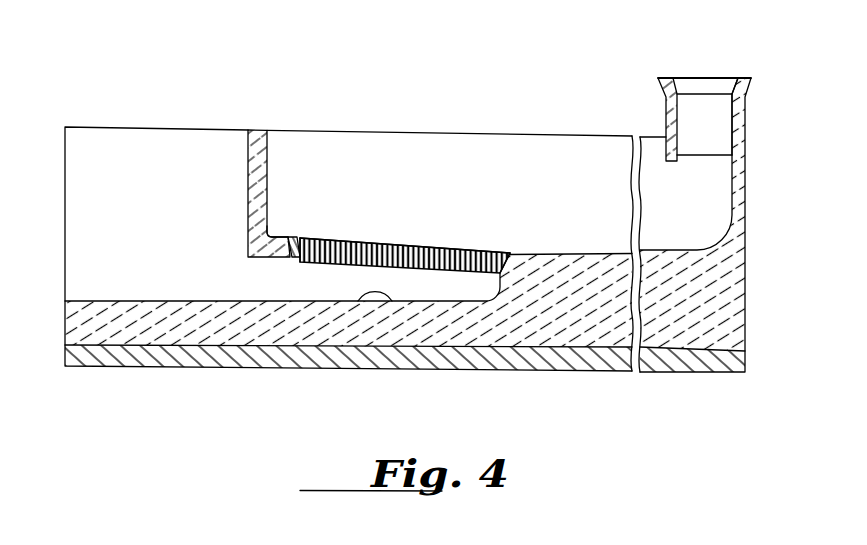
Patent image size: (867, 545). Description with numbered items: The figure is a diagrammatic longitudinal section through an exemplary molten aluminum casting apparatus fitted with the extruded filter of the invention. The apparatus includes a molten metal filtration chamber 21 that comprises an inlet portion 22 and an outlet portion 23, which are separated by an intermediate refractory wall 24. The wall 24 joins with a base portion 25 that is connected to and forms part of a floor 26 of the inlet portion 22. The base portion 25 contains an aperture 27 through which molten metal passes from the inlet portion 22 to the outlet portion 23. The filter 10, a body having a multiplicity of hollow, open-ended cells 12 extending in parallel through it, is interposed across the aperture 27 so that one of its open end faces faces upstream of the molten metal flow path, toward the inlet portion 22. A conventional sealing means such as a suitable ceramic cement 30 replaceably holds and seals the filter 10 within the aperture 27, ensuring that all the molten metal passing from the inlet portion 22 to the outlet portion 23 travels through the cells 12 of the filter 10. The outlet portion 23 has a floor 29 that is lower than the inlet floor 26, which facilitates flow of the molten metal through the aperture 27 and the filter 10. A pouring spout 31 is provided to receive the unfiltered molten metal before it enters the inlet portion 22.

The filter body 10 is at (438, 240).
The cells 12 is at (393, 243).
The molten metal filtration chamber 21 is at (350, 125).
The inlet portion 22 is at (545, 154).
The outlet portion 23 is at (230, 278).
The intermediate refractory wall 24 is at (260, 178).
The base portion 25 is at (282, 247).
The floor 26 is at (593, 253).
The aperture 27 is at (293, 248).
The floor 29 is at (365, 301).
The ceramic cement 30 is at (512, 255).
The pouring spout 31 is at (703, 105).